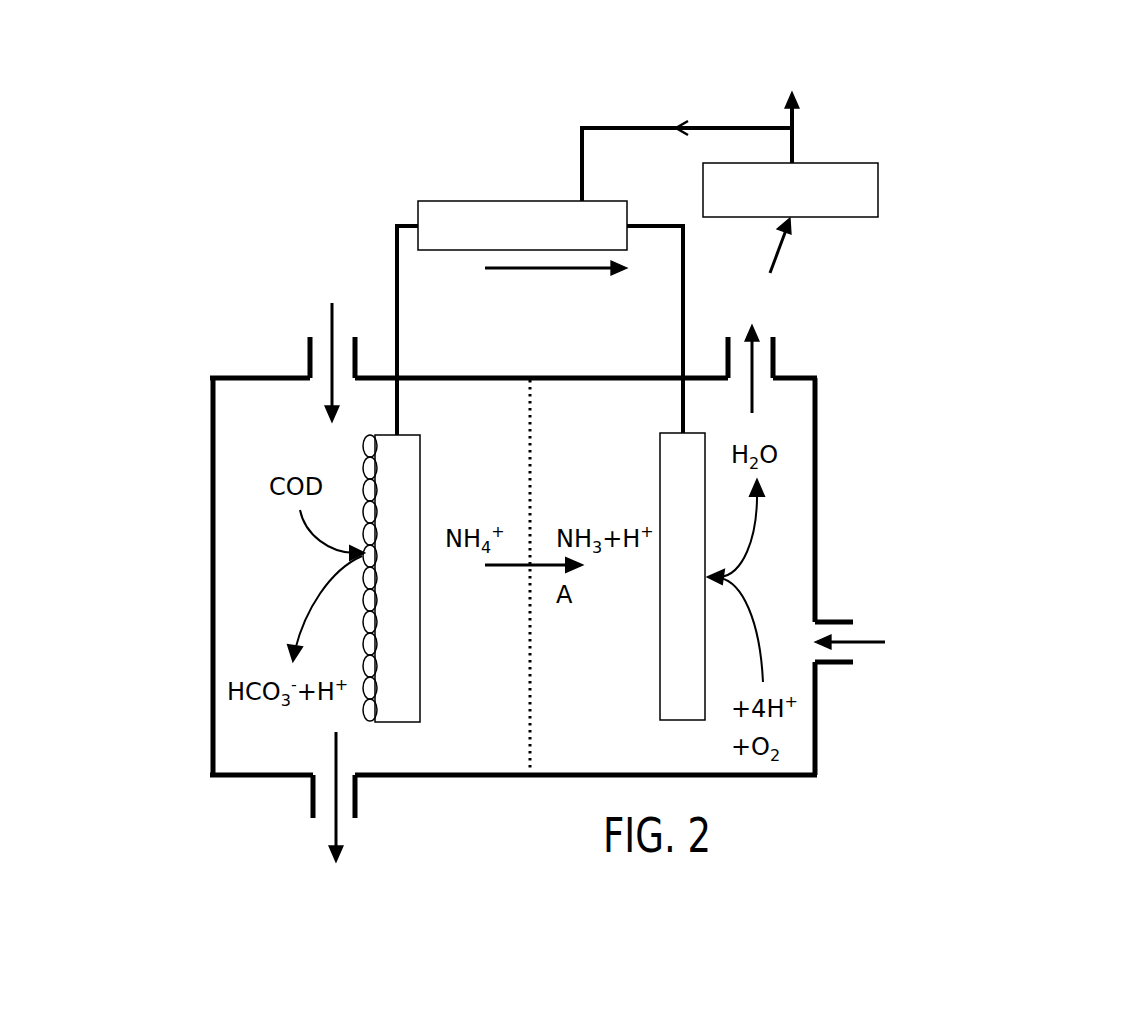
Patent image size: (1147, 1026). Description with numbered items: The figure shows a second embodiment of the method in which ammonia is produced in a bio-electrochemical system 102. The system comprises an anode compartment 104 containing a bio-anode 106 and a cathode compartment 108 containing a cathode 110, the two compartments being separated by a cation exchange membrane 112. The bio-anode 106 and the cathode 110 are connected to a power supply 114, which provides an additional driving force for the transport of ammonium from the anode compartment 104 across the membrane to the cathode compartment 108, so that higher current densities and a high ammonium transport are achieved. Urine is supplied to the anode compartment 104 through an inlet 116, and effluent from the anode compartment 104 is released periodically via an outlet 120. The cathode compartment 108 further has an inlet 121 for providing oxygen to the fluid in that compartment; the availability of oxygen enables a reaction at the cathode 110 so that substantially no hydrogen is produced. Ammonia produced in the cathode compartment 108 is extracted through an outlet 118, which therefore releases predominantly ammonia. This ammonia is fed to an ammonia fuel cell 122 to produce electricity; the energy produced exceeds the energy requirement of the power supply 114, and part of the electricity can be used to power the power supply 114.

The bio-electrochemical system 102 is at (930, 438).
The anode compartment 104 is at (242, 420).
The bio-anode 106 is at (407, 462).
The cathode compartment 108 is at (803, 502).
The cathode 110 is at (675, 487).
The cation exchange membrane 112 is at (535, 388).
The power supply 114 is at (508, 200).
The inlet 116 is at (318, 337).
The outlet 118 is at (768, 347).
The outlet 120 is at (330, 815).
The inlet 121 is at (847, 653).
The ammonia fuel cell 122 is at (872, 190).